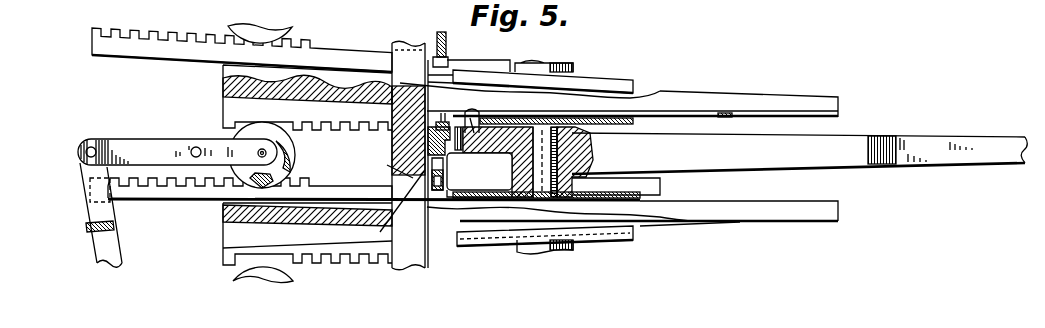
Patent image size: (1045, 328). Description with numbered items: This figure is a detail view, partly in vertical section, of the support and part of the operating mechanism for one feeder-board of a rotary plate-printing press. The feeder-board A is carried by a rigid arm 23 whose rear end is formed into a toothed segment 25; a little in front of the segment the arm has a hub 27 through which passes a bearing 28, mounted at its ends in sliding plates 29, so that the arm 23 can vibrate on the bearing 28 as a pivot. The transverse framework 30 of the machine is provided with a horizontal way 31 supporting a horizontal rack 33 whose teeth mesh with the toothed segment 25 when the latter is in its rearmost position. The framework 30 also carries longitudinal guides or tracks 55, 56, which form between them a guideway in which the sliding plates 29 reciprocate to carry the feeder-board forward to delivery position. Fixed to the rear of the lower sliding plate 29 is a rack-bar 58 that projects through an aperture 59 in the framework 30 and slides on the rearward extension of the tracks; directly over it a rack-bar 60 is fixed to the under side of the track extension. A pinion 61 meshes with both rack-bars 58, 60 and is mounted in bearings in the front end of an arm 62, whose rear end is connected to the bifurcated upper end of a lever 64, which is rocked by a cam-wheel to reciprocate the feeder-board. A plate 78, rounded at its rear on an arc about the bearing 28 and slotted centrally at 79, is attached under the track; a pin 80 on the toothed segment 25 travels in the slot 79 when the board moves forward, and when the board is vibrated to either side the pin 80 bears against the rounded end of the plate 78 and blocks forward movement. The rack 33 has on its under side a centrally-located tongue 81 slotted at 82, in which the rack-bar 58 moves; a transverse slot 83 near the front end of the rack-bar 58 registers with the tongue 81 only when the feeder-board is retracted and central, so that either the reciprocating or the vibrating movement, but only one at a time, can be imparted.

The arm 23 is at (799, 164).
The toothed segment 25 is at (479, 171).
The hub 27 is at (512, 160).
The bearing 28 is at (544, 162).
The sliding plate 29 is at (618, 80).
The transverse framework 30 is at (410, 155).
The horizontal way 31 is at (444, 112).
The horizontal rack 33 is at (427, 143).
The guide or track 55 is at (225, 74).
The guide or track 56 is at (225, 234).
The rack-bar 58 is at (160, 36).
The aperture 59 is at (408, 178).
The rack-bar 60 is at (212, 260).
The pinion 61 is at (262, 34).
The arm 62 is at (143, 142).
The lever 64 is at (92, 217).
The plate 78 is at (723, 112).
The slot 79 is at (686, 113).
The pin 80 is at (476, 113).
The tongue or projection 81 is at (447, 44).
The slot 82 is at (420, 203).
The transverse slot 83 is at (440, 192).
The feeder-board A is at (911, 151).